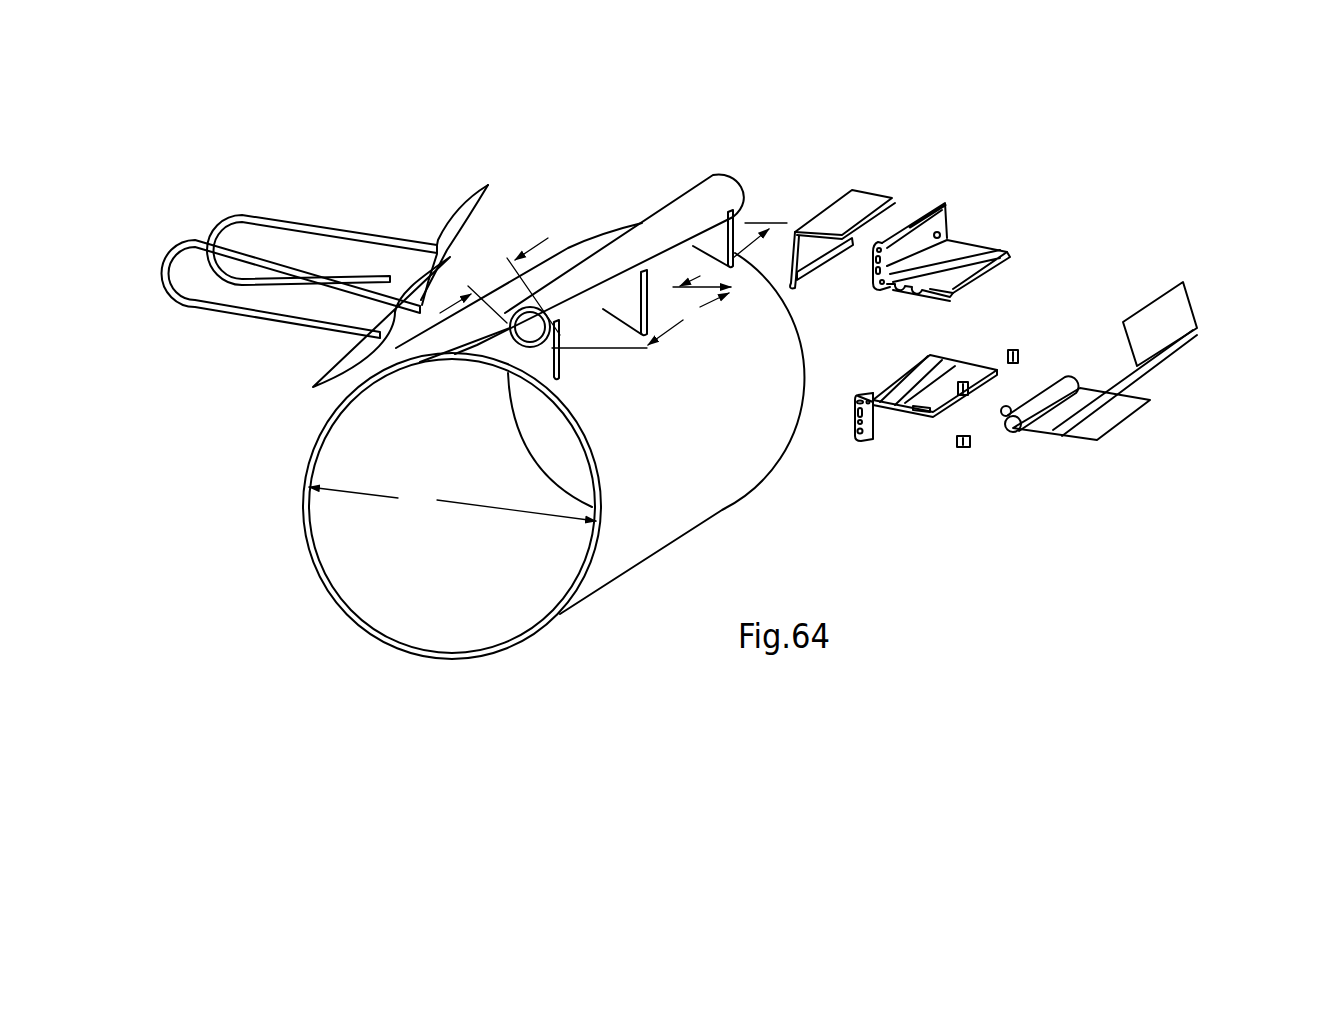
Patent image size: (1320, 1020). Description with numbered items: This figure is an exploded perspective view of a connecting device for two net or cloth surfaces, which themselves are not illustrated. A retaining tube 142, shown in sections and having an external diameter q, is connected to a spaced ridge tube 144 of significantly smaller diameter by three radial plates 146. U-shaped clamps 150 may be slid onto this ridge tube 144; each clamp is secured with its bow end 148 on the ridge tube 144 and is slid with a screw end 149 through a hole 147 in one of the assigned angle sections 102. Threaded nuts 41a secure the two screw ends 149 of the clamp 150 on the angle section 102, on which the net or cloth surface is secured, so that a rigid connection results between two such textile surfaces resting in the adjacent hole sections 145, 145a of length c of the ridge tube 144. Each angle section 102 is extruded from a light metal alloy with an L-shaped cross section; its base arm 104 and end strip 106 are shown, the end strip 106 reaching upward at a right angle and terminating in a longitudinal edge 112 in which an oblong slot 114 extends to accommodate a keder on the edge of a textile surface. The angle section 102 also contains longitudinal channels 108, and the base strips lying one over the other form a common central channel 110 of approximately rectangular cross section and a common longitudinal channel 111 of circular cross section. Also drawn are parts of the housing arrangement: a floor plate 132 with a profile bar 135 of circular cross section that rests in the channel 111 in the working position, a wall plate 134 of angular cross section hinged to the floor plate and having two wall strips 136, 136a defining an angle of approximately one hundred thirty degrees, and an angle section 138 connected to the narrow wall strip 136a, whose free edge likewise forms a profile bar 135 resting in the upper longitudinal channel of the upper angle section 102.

The angle section 102 is at (932, 318).
The base arm 104 is at (977, 372).
The end strip 106 is at (875, 413).
The longitudinal channel 108 is at (857, 402).
The central channel 110 is at (920, 297).
The longitudinal channel 111 is at (903, 288).
The longitudinal edge 112 is at (946, 204).
The oblong slot 114 is at (865, 433).
The floor plate 132 is at (1141, 360).
The wall plate 134 is at (1161, 323).
The profile bar 135 is at (822, 267).
The wall strip 136 is at (1128, 377).
The narrow wall strip 136a is at (1175, 318).
The angle section 138 is at (930, 242).
The retaining tube 142 is at (553, 385).
The ridge tube 144 is at (668, 202).
The hole section 145 is at (587, 290).
The hole section 145a is at (649, 252).
The radial plate 146 is at (633, 380).
The hole 147 is at (946, 233).
The bow end 148 is at (299, 277).
The screw end 149 is at (489, 187).
The U-shaped clamp 150 is at (379, 234).
The threaded nut 41a is at (1015, 348).